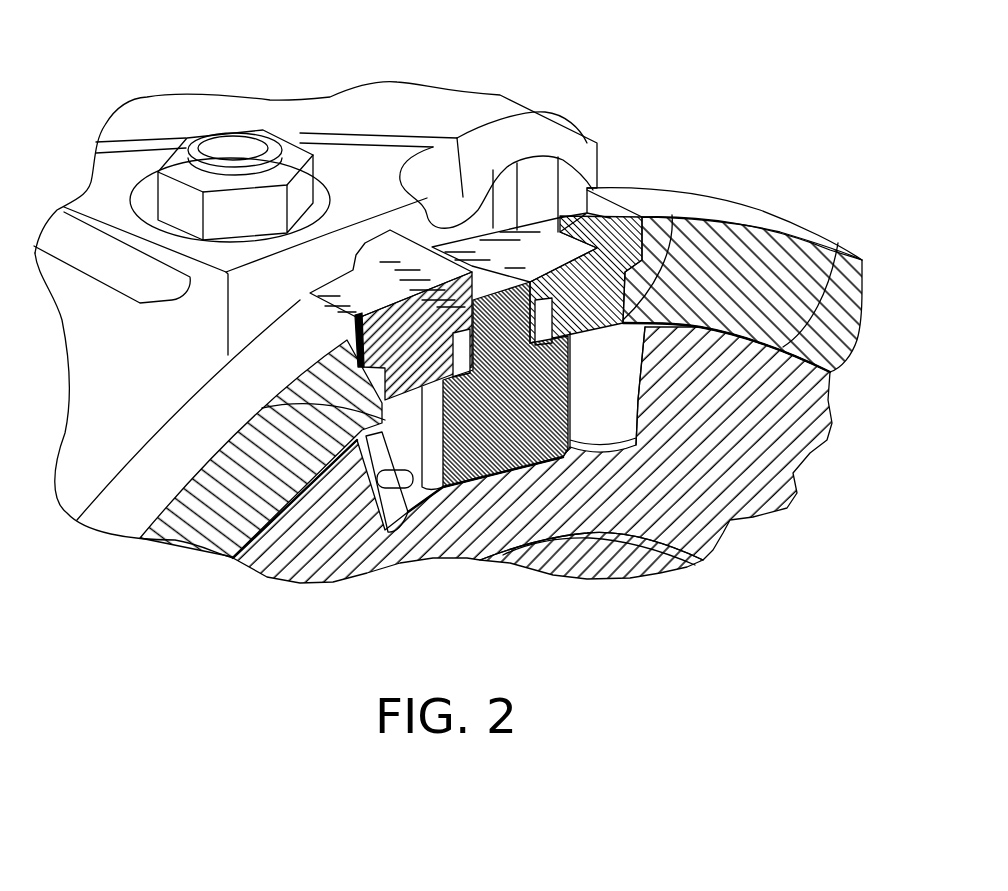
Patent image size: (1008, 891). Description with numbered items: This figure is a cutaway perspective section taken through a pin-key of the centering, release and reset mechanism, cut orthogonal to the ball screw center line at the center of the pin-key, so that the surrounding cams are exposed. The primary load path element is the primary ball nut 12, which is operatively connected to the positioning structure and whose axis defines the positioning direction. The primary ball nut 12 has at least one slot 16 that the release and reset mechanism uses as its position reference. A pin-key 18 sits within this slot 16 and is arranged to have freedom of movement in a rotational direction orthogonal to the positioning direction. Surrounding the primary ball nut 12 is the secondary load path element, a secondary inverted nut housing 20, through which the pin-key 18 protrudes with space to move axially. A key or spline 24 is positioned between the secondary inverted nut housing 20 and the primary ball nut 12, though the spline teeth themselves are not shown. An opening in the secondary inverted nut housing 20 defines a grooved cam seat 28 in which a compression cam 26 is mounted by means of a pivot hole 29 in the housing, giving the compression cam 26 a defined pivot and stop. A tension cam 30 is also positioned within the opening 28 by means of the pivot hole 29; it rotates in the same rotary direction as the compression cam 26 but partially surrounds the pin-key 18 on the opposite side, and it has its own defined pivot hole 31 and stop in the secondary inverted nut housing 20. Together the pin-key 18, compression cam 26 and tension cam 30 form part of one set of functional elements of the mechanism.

The primary ball nut 12 is at (763, 460).
The slot 16 is at (407, 513).
The pin-key 18 is at (493, 443).
The secondary inverted nut housing 20 is at (742, 242).
The spline 24 is at (805, 245).
The compression cam 26 is at (380, 268).
The grooved cam seat 28 is at (362, 365).
The pivot hole 29 is at (262, 408).
The tension cam 30 is at (518, 253).
The pivot hole 31 is at (672, 215).